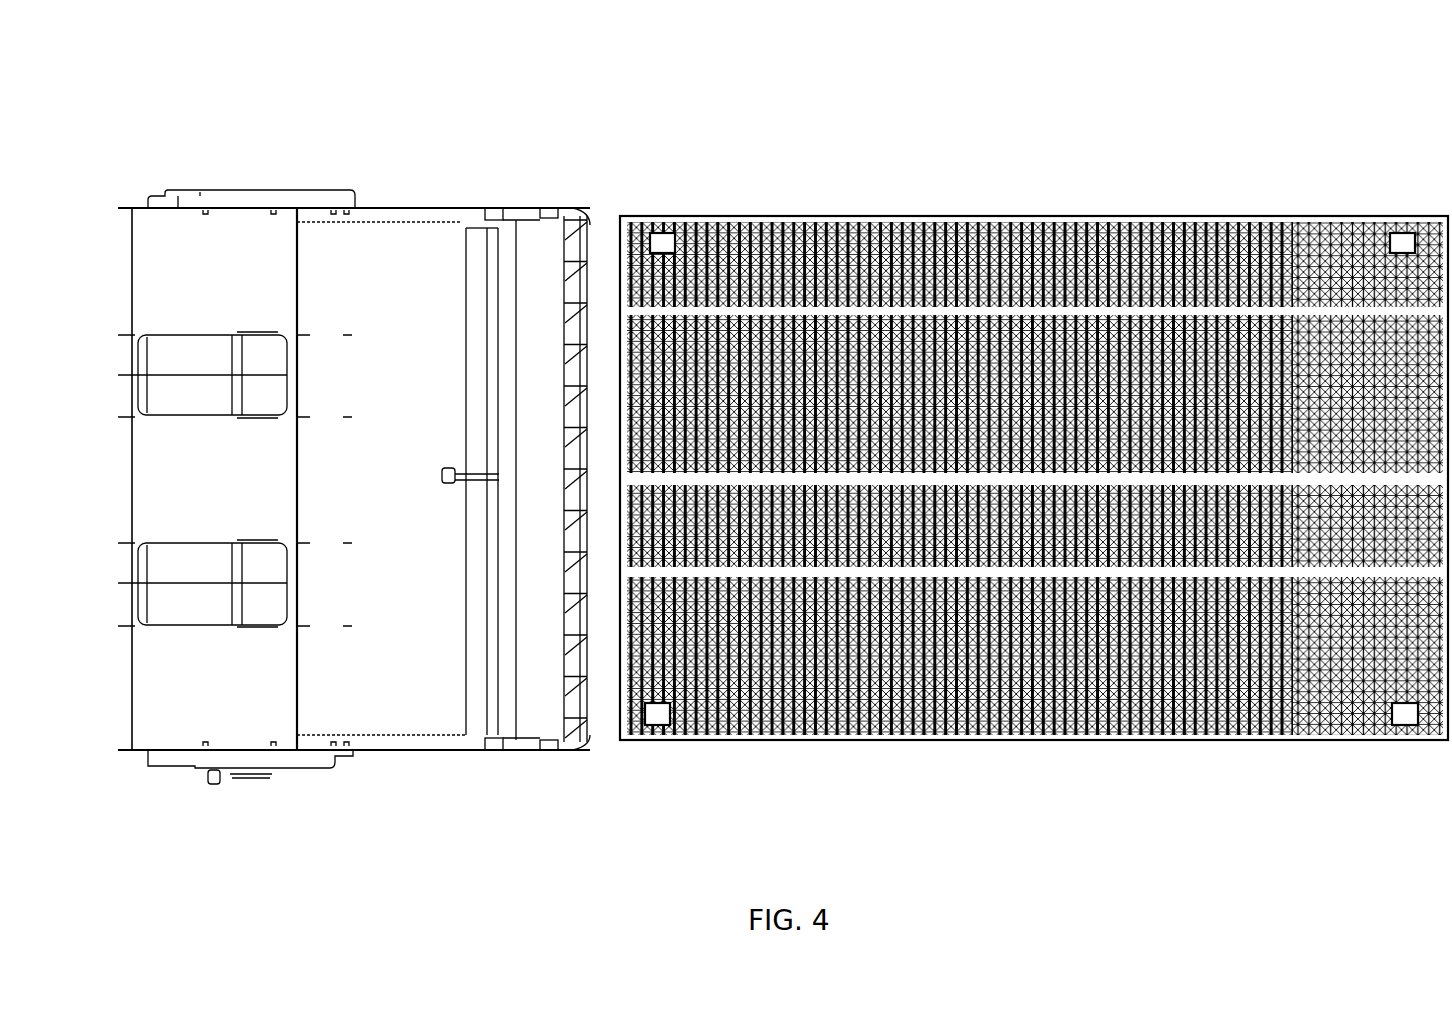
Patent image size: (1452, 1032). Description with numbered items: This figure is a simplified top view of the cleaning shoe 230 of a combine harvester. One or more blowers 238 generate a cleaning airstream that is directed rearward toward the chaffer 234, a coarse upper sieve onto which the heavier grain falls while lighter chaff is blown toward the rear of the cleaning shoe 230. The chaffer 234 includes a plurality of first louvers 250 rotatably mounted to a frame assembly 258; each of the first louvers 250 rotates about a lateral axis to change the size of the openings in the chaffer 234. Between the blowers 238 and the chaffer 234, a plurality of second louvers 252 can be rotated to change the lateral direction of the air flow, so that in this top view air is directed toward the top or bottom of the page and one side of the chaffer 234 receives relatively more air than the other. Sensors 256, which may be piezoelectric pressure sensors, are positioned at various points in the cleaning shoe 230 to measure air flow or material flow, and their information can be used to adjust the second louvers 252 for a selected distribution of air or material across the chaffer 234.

The cleaning shoe 230 is at (346, 105).
The blower 238 is at (213, 700).
The second louvers 252 is at (578, 720).
The chaffer 234 is at (820, 216).
The first louvers 250 is at (1040, 216).
The frame assembly 258 is at (1318, 216).
The sensors 256 is at (662, 238).